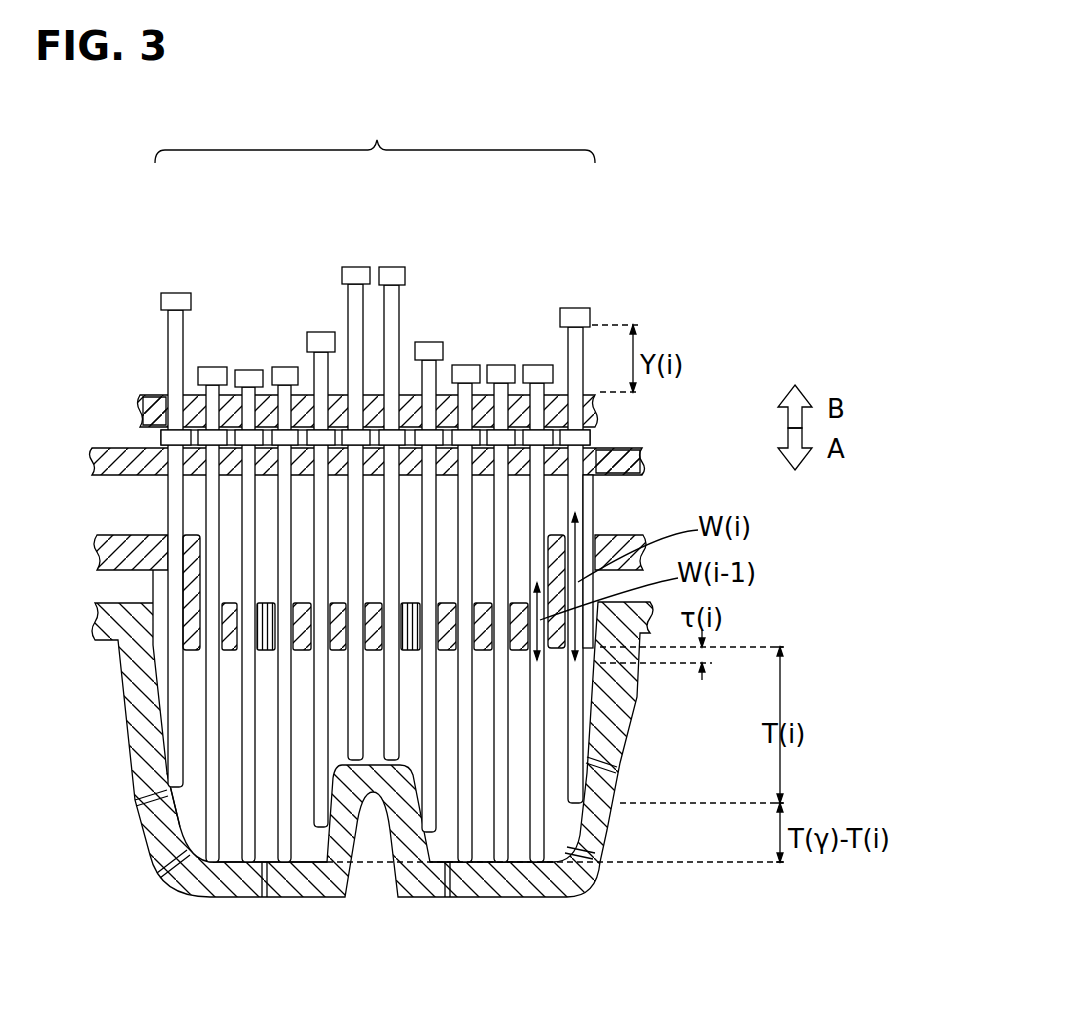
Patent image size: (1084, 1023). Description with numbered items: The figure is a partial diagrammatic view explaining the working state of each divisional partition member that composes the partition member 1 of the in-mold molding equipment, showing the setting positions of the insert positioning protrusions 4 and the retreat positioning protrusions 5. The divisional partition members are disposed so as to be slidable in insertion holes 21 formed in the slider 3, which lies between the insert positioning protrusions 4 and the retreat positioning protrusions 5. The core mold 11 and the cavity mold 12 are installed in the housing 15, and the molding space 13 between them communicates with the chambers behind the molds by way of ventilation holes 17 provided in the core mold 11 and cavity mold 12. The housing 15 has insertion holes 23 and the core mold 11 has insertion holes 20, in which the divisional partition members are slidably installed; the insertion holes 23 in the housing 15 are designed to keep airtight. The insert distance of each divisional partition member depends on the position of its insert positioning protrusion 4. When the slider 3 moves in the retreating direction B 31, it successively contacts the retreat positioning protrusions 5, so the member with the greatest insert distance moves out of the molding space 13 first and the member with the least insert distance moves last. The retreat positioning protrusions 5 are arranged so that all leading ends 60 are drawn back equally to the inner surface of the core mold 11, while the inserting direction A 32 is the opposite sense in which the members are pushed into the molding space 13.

The partition member 1 is at (382, 130).
The slider 3 is at (140, 398).
The insert positioning protrusion 4 is at (165, 437).
The retreat positioning protrusion 5 is at (178, 292).
The core mold 11 is at (585, 550).
The cavity mold 12 is at (623, 709).
The molding space 13 is at (568, 822).
The housing 15 is at (93, 463).
The ventilation hole 17 is at (262, 650).
The insertion hole 20 is at (580, 585).
The insertion hole 21 is at (178, 408).
The insertion hole 23 is at (600, 453).
The retreating direction B 31 is at (800, 390).
The inserting direction A 32 is at (802, 471).
The leading end 60 is at (243, 858).